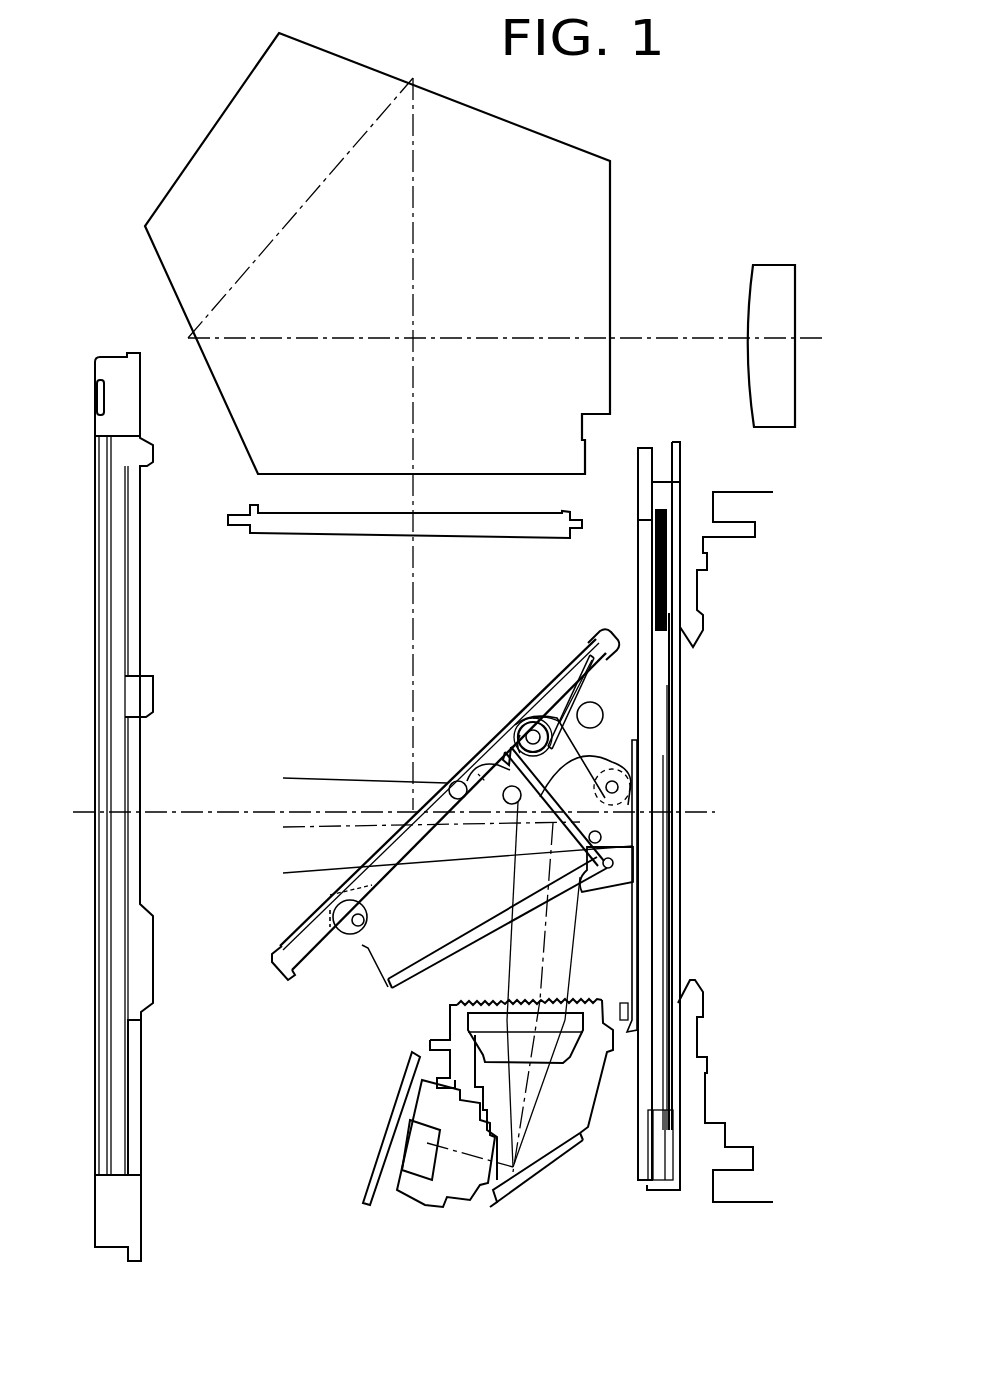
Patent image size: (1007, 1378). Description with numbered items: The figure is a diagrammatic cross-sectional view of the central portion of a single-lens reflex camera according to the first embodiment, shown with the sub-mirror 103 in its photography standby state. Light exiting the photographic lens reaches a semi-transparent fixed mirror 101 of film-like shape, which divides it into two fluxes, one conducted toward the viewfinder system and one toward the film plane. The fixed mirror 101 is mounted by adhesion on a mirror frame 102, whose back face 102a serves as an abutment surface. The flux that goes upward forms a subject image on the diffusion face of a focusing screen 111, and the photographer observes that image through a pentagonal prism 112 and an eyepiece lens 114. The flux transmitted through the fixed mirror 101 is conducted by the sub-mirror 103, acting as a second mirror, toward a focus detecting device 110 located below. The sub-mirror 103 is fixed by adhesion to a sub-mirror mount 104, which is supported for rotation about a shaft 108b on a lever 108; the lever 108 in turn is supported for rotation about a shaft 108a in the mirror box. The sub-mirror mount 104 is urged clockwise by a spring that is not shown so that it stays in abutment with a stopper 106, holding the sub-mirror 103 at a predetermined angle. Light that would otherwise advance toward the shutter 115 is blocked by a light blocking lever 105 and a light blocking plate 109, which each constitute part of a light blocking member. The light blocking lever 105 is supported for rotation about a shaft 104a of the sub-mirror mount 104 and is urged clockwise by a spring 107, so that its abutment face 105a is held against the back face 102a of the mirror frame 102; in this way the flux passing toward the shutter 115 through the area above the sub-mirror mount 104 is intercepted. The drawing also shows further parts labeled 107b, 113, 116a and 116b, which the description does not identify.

The fixed mirror 101 is at (551, 668).
The mirror frame 102 is at (285, 980).
The back face 102a is at (310, 950).
The sub-mirror 103 is at (488, 735).
The sub-mirror mount 104 is at (575, 745).
The shaft 104a is at (528, 702).
The light blocking lever 105 is at (583, 636).
The abutment face 105a is at (440, 783).
The stopper 106 is at (603, 713).
The spring 107 is at (620, 762).
The lever pin 107b is at (630, 800).
The lever 108 is at (393, 985).
The shaft 108a is at (340, 893).
The shaft 108b is at (615, 860).
The light blocking plate 109 is at (635, 920).
The focus detecting device 110 is at (467, 987).
The focusing screen 111 is at (325, 537).
The pentagonal prism 112 is at (247, 452).
The rear cover 113 is at (95, 372).
The eyepiece lens 114 is at (747, 303).
The shutter 115 is at (635, 1143).
The lower frame 116a is at (705, 1003).
The upper frame 116b is at (707, 630).